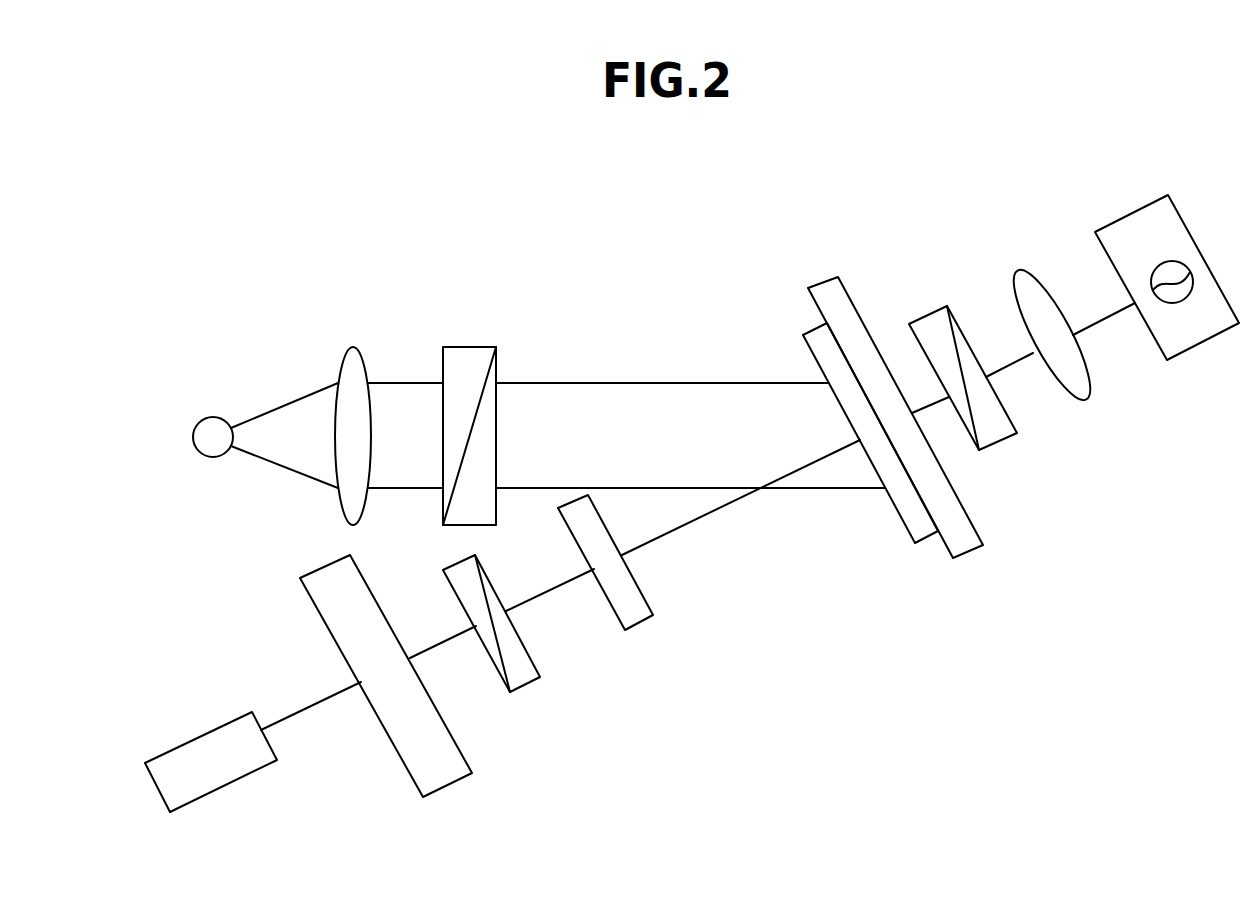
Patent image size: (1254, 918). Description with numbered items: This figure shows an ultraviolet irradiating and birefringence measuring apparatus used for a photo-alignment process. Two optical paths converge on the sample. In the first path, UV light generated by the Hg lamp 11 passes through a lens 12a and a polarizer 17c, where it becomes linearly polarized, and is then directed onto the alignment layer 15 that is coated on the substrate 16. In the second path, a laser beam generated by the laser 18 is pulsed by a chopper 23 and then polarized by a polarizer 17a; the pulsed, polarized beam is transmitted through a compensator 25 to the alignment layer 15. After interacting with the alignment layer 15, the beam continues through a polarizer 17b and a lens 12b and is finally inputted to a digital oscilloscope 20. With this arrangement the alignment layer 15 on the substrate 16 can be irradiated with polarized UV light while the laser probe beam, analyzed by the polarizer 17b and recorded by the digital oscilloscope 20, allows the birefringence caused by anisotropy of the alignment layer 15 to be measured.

The Hg lamp 11 is at (210, 423).
The lens 12a is at (351, 365).
The lens 12b is at (1077, 385).
The alignment layer 15 is at (810, 327).
The substrate 16 is at (833, 300).
The polarizer 17a is at (523, 672).
The polarizer 17b is at (998, 428).
The polarizer 17c is at (468, 365).
The laser 18 is at (218, 770).
The digital oscilloscope 20 is at (1195, 330).
The chopper 23 is at (445, 768).
The compensator 25 is at (632, 608).